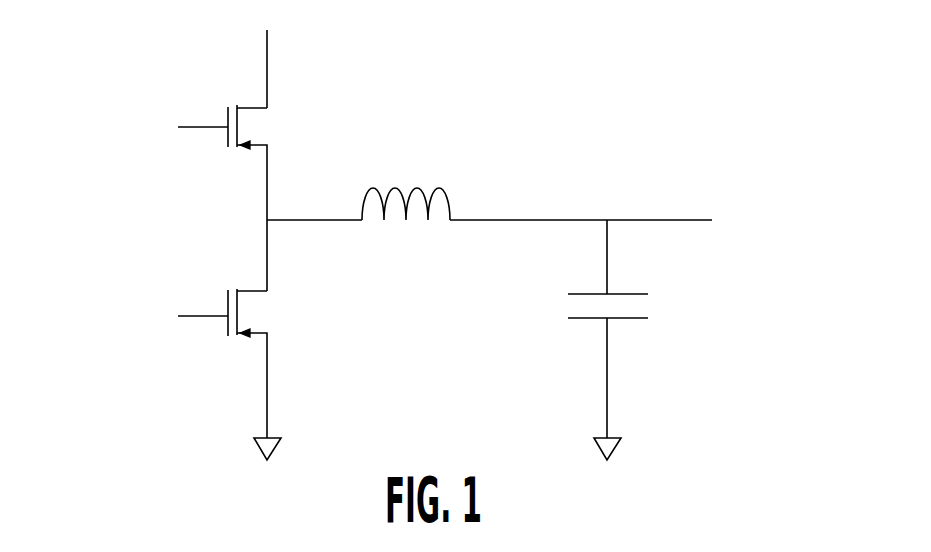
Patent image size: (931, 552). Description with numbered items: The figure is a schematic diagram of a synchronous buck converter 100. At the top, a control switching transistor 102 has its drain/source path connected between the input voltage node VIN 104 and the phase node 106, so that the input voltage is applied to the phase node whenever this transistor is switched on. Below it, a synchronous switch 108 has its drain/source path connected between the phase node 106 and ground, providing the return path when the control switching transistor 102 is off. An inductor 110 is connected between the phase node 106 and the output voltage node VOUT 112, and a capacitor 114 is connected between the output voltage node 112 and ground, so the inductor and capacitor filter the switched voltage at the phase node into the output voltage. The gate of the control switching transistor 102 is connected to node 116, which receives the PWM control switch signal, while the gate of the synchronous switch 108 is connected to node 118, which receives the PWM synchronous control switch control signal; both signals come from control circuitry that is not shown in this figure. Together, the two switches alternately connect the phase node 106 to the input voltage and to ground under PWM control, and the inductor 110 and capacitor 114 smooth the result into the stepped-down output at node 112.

The synchronous buck converter 100 is at (692, 88).
The control switching transistor 102 is at (260, 118).
The input voltage node 104 is at (267, 70).
The phase node 106 is at (267, 222).
The synchronous switch 108 is at (265, 307).
The inductor 110 is at (417, 190).
The output voltage node 112 is at (607, 218).
The capacitor 114 is at (640, 330).
The node receiving PWM control switch signal 116 is at (187, 125).
The node receiving PWM synchronous control switch control signal 118 is at (188, 316).